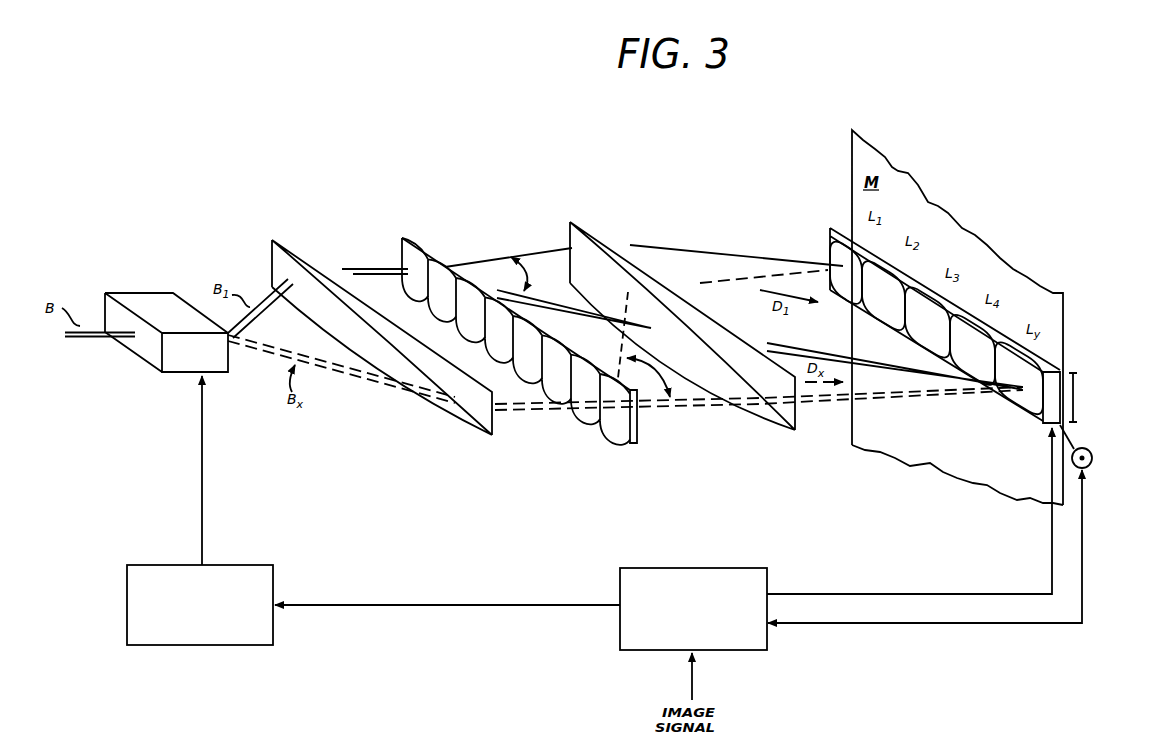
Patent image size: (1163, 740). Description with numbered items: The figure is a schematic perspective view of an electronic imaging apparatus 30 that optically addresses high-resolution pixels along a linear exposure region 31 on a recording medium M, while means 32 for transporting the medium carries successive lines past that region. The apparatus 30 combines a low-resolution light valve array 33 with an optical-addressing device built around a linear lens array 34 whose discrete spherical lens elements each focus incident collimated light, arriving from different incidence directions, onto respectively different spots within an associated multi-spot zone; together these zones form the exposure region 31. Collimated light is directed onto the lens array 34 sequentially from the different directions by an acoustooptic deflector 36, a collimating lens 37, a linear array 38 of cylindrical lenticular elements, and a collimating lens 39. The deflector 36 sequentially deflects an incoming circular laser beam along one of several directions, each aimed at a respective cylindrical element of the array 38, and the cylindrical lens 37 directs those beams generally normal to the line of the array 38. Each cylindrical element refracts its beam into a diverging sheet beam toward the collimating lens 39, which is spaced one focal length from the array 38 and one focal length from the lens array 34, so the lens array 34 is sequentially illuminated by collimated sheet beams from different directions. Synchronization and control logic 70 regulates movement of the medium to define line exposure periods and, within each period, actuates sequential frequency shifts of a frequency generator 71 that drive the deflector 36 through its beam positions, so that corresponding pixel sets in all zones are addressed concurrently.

The electronic imaging apparatus 30 is at (500, 145).
The linear exposure region 31 is at (1078, 396).
The means for transporting recording medium 32 is at (1094, 453).
The low-resolution light valve array 33 is at (913, 300).
The linear lens array 34 is at (830, 253).
The acoustooptic deflector 36 is at (158, 298).
The collimating lens 37 is at (301, 258).
The linear array of cylindrical lenticular elements 38 is at (403, 236).
The collimating lens 39 is at (587, 228).
The synchronization and control logic 70 is at (768, 638).
The frequency generator 71 is at (274, 630).